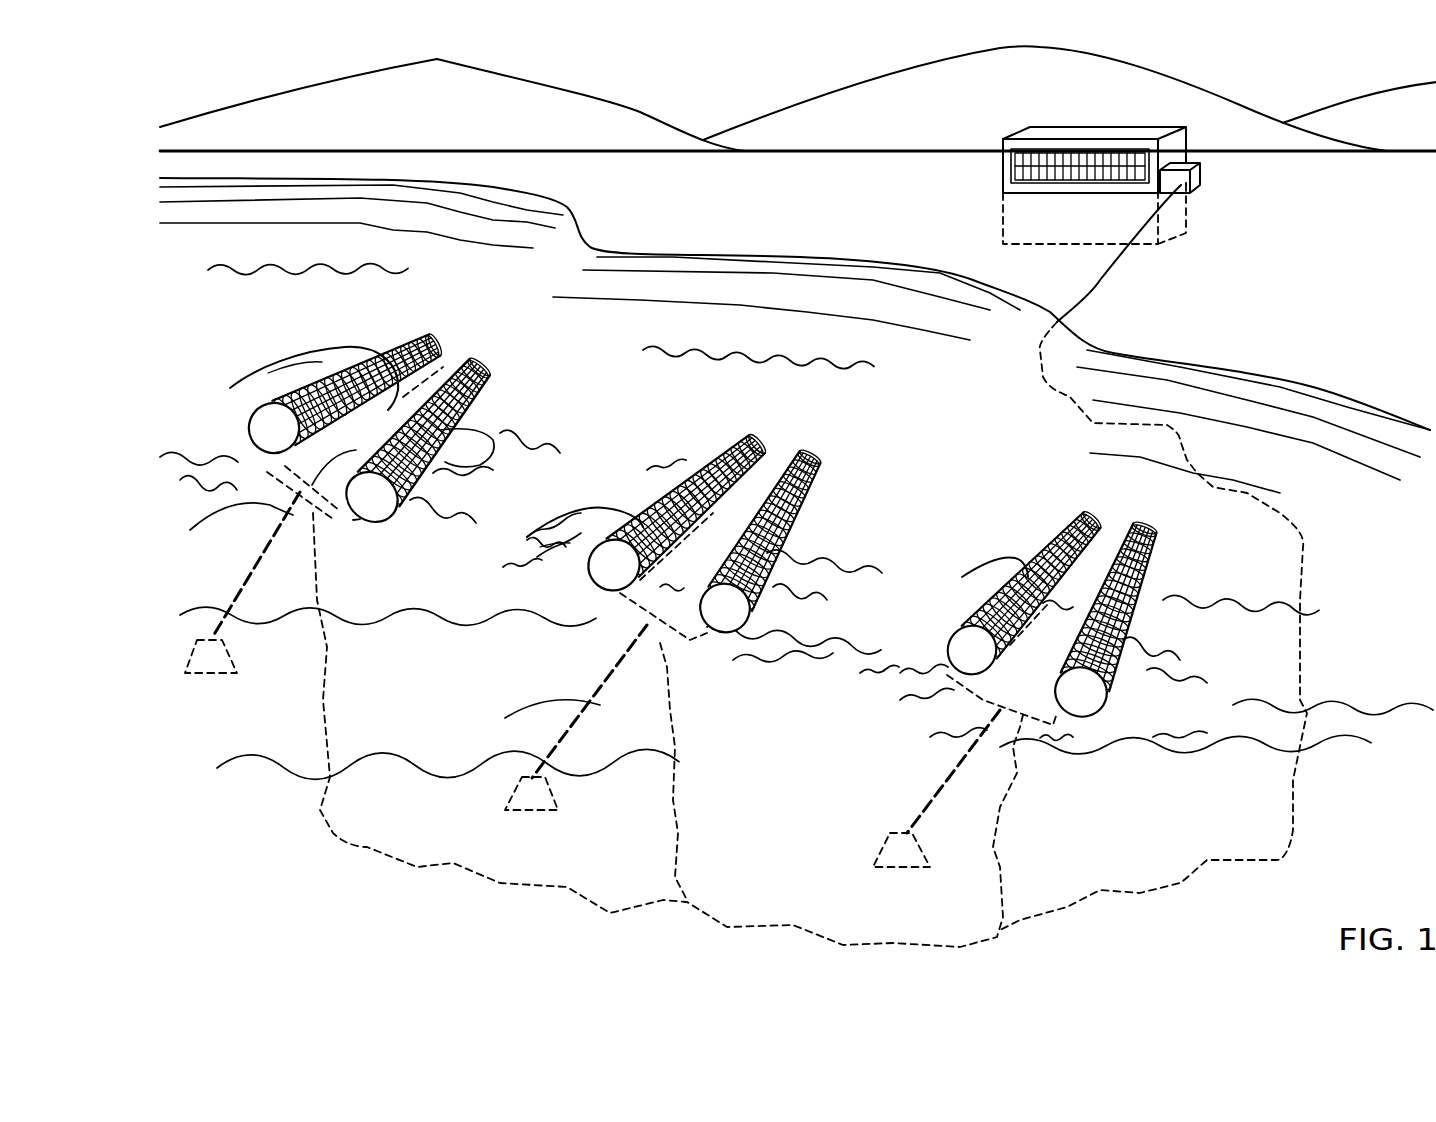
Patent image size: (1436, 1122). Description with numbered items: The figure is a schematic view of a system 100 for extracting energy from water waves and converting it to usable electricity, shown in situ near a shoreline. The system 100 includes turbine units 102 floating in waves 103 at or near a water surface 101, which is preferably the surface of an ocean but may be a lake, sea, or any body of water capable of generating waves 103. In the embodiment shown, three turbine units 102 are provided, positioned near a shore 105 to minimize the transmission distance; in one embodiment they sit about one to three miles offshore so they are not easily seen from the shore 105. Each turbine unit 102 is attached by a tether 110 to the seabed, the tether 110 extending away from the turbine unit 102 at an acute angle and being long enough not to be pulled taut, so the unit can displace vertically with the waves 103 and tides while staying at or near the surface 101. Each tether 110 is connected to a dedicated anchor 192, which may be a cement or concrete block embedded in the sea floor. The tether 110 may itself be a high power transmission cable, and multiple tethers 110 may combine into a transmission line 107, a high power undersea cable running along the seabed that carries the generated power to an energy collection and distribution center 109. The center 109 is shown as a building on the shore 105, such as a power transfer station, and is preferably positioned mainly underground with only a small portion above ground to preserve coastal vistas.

The system 100 is at (635, 407).
The water surface 101 is at (492, 318).
The turbine unit 102 is at (488, 395).
The waves 103 is at (325, 347).
The shore 105 is at (1331, 369).
The transmission line 107 is at (1100, 282).
The energy collection and distribution center 109 is at (1070, 135).
The tether 110 is at (235, 590).
The anchor 192 is at (188, 660).